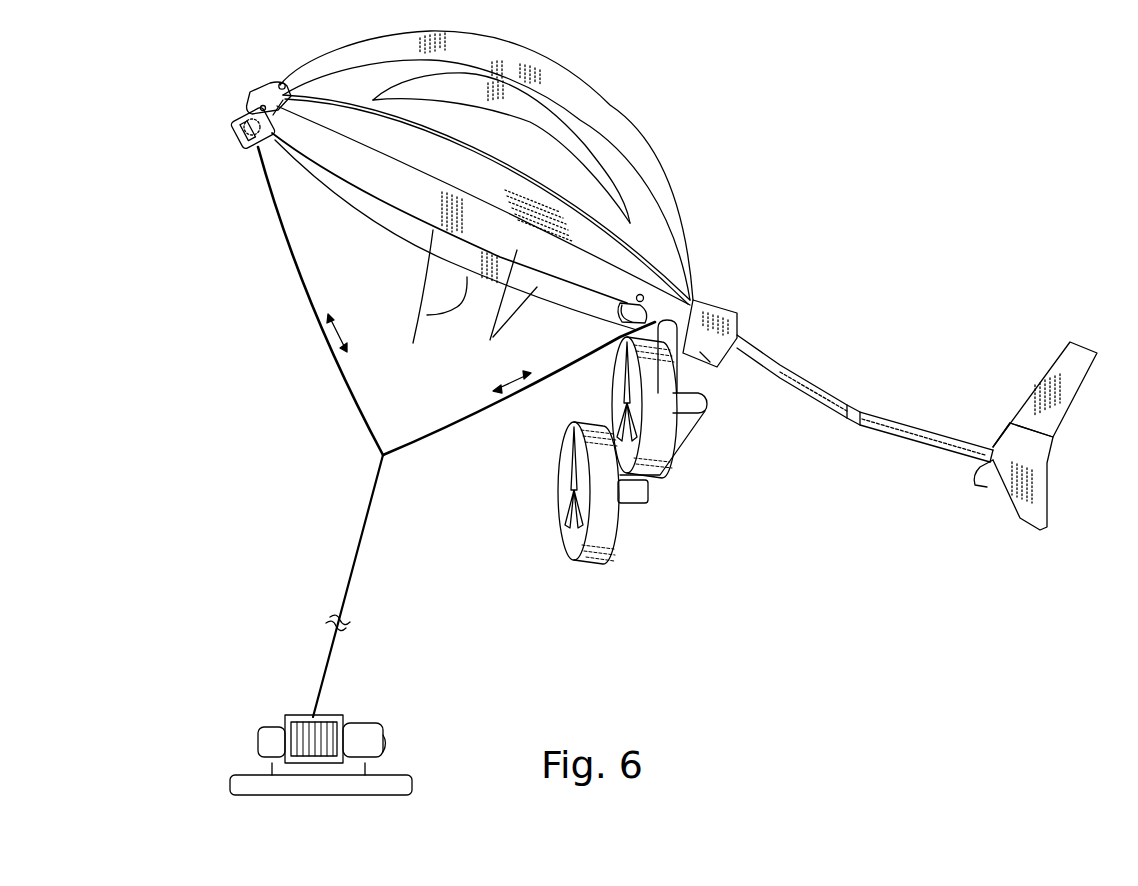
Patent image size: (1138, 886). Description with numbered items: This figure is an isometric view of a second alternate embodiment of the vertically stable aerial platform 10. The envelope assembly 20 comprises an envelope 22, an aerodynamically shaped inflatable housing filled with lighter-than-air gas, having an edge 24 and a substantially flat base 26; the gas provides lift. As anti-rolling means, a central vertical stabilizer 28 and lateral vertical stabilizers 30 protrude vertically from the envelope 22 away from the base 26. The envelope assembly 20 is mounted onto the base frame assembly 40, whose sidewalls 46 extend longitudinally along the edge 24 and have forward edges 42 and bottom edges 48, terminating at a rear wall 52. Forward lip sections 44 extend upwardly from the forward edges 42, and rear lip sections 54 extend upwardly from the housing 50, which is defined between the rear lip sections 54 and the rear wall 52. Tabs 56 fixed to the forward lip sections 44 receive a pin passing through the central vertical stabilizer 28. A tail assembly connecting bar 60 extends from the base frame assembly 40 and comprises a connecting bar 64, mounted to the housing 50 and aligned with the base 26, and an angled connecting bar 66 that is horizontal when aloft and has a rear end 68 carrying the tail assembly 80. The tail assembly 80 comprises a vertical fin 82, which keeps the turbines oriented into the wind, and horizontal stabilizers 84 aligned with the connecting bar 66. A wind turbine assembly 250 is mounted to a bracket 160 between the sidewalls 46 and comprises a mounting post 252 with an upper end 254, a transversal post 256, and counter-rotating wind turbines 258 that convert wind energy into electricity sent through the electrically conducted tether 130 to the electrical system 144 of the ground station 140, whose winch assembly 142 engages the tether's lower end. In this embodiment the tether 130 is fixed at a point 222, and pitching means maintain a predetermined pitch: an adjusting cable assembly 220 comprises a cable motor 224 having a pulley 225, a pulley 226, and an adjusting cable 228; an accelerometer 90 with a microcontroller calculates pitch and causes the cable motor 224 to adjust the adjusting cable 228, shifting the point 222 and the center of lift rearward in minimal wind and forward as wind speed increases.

The vertically stable aerial platform 10 is at (862, 84).
The envelope assembly 20 is at (693, 126).
The envelope 22 is at (650, 207).
The edge 24 is at (693, 303).
The base 26 is at (357, 127).
The central vertical stabilizer 28 is at (570, 90).
The lateral vertical stabilizers 30 is at (580, 140).
The base frame assembly 40 is at (795, 292).
The forward edges 42 is at (247, 93).
The forward lip sections 44 is at (247, 90).
The sidewalls 46 is at (501, 308).
The bottom edges 48 is at (431, 298).
The housing 50 is at (710, 357).
The rear wall 52 is at (737, 338).
The rear lip sections 54 is at (700, 307).
The tabs 56 is at (274, 82).
The tail assembly connecting bar 60 is at (878, 353).
The connecting bar 64 is at (840, 403).
The connecting bar 66 is at (953, 443).
The rear end 68 is at (993, 453).
The tail assembly 80 is at (993, 515).
The vertical fin 82 is at (1065, 365).
The horizontal stabilizers 84 is at (1040, 450).
The accelerometer 90 is at (265, 140).
The electrically conducted tether 130 is at (356, 535).
The ground station 140 is at (280, 697).
The winch assembly 142 is at (267, 733).
The electrical system 144 is at (373, 727).
The bracket 160 is at (666, 318).
The adjusting cable assembly 220 is at (292, 283).
The point 222 is at (380, 455).
The cable motor 224 is at (240, 137).
The pulley 225 is at (233, 128).
The pulley 226 is at (623, 330).
The adjusting cable 228 is at (325, 345).
The wind turbine assembly 250 is at (548, 465).
The mounting post 252 is at (670, 340).
The upper end 254 is at (668, 312).
The transversal post 256 is at (680, 437).
The wind turbines 258 is at (655, 455).